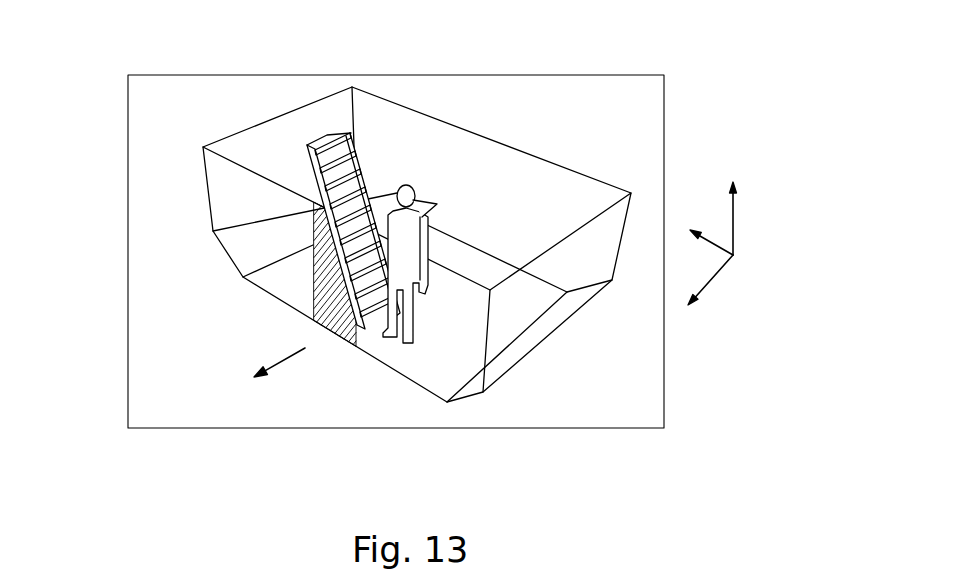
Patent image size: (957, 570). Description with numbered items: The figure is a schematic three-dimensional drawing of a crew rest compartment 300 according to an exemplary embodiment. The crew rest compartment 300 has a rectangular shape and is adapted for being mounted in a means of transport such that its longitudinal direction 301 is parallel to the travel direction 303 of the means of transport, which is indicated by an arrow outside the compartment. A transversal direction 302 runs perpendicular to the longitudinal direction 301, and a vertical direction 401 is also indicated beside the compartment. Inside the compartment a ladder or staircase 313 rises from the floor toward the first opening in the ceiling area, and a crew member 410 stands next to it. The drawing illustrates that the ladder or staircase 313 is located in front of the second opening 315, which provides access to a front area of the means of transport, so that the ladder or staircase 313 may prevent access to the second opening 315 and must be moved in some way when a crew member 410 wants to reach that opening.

The crew rest compartment 300 is at (563, 112).
The ladder or staircase 313 is at (364, 155).
The second opening 315 is at (313, 294).
The crew member 410 is at (428, 273).
The travel direction 303 is at (288, 365).
The longitudinal direction of the crew rest compartment 301 is at (718, 278).
The transversal direction of the crew rest compartment 302 is at (720, 237).
The vertical direction of the crew rest compartment 401 is at (737, 222).